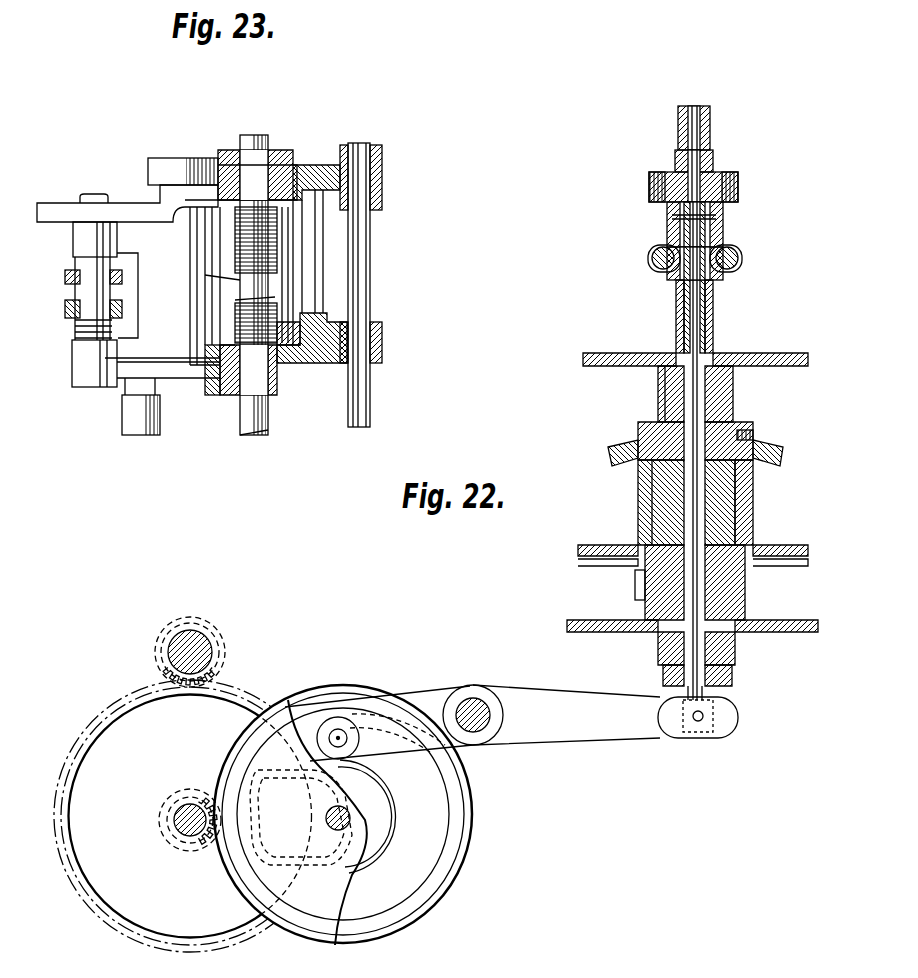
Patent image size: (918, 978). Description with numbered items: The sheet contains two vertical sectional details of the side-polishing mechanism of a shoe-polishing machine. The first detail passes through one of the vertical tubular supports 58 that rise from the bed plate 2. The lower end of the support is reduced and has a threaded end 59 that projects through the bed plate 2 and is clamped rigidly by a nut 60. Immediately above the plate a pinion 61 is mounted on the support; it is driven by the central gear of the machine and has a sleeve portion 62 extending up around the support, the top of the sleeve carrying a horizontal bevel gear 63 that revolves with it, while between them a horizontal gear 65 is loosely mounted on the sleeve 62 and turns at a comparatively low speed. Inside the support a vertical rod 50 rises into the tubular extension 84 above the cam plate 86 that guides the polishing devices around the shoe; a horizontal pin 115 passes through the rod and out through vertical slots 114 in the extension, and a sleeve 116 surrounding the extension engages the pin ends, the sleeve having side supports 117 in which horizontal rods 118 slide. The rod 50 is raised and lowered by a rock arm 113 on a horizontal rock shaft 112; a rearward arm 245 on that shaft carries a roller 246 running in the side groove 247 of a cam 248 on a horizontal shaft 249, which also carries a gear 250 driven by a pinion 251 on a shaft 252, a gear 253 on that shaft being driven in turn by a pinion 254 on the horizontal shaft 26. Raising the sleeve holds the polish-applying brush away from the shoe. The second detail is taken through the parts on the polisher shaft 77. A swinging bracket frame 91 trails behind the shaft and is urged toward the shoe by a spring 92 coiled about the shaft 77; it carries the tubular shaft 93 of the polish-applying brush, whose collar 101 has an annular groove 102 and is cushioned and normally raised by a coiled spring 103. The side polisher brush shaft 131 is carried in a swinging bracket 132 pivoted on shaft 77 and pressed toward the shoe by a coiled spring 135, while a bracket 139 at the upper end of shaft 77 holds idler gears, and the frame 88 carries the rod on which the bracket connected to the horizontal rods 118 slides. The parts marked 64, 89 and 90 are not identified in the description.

In FIG. 22, the bed plate 2 is at (586, 620).
In FIG. 22, the horizontal shaft 26 is at (205, 645).
In FIG. 22, the vertical rod 50 is at (689, 306).
In FIG. 22, the tubular support 58 is at (738, 492).
In FIG. 22, the threaded end 59 is at (737, 651).
In FIG. 22, the nut 60 is at (664, 681).
In FIG. 22, the pinion 61 is at (636, 586).
In FIG. 22, the sleeve portion 62 is at (748, 512).
In FIG. 22, the horizontal bevel gear 63 is at (627, 448).
In FIG. 22, the clutch tooth 64 is at (752, 440).
In FIG. 22, the horizontal gear 65 is at (606, 545).
In FIG. 23, the vertical shaft 77 is at (252, 147).
In FIG. 22, the tubular extension 84 is at (714, 312).
In FIG. 22, the cam plate 86 is at (748, 358).
In FIG. 23, the frame 88 is at (228, 148).
In FIG. 23, the bracket plate 89 is at (190, 386).
In FIG. 23, the stop block 90 is at (122, 421).
In FIG. 23, the swinging bracket frame 91 is at (302, 182).
In FIG. 23, the spring 92 is at (235, 232).
In FIG. 23, the vertical shaft 93 is at (88, 266).
In FIG. 23, the collar 101 is at (67, 278).
In FIG. 23, the annular groove 102 is at (72, 301).
In FIG. 23, the coiled spring 103 is at (76, 327).
In FIG. 22, the rock shaft 112 is at (486, 728).
In FIG. 22, the rock arms 113 is at (605, 715).
In FIG. 22, the vertical slots 114 is at (732, 216).
In FIG. 22, the horizontal pin 115 is at (668, 218).
In FIG. 22, the sleeve 116 is at (726, 232).
In FIG. 22, the side supports 117 is at (650, 259).
In FIG. 22, the horizontal rods 118 is at (658, 252).
In FIG. 23, the vertical shaft 131 is at (373, 255).
In FIG. 23, the swinging bracket 132 is at (296, 170).
In FIG. 23, the coiled spring 135 is at (238, 320).
In FIG. 23, the bracket 139 is at (166, 170).
In FIG. 22, the arm 245 is at (430, 690).
In FIG. 22, the roller 246 is at (386, 760).
In FIG. 22, the side groove 247 is at (430, 823).
In FIG. 22, the cam 248 is at (455, 876).
In FIG. 22, the horizontal shaft 249 is at (326, 816).
In FIG. 22, the gear 250 is at (322, 822).
In FIG. 22, the pinion 251 is at (200, 800).
In FIG. 22, the shaft 252 is at (176, 817).
In FIG. 22, the gear 253 is at (184, 694).
In FIG. 22, the pinion 254 is at (222, 680).